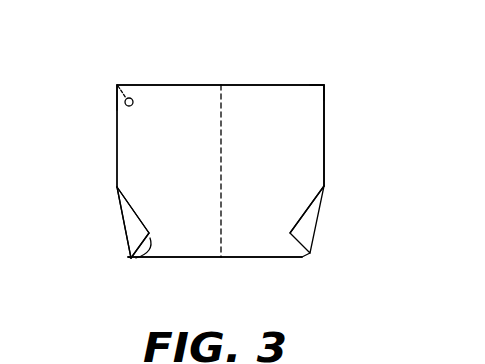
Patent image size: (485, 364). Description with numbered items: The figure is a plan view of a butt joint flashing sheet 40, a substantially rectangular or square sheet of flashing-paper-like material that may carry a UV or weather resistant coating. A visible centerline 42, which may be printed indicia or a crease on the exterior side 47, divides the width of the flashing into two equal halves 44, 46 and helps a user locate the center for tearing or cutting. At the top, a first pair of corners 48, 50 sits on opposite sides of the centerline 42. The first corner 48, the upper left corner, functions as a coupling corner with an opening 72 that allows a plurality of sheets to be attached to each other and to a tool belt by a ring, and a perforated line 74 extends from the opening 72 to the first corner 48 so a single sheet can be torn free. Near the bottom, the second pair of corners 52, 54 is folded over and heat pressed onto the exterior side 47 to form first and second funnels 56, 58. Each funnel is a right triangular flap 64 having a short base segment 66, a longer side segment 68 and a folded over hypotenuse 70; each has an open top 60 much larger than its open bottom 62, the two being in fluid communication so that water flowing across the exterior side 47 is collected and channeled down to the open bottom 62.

The butt joint flashing sheet 40 is at (350, 92).
The centerline 42 is at (222, 83).
The half 44 is at (157, 83).
The half 46 is at (264, 103).
The exterior side 47 is at (285, 128).
The first corner 48 is at (113, 90).
The first corner 50 is at (329, 84).
The second corner 52 is at (160, 246).
The second corner 54 is at (285, 238).
The first funnel 56 is at (119, 213).
The second funnel 58 is at (314, 213).
The open top 60 is at (134, 184).
The open bottom 62 is at (137, 253).
The triangular flap 64 is at (137, 240).
The short base segment 66 is at (143, 247).
The longer side segment 68 is at (137, 198).
The hypotenuse 70 is at (117, 201).
The opening 72 is at (122, 106).
The perforated line 74 is at (128, 83).